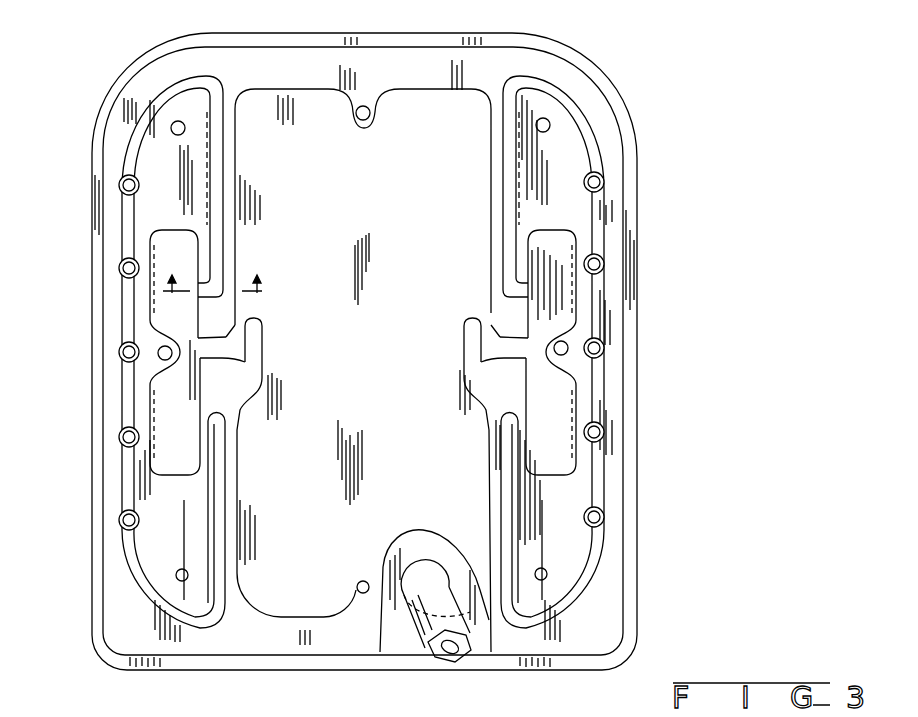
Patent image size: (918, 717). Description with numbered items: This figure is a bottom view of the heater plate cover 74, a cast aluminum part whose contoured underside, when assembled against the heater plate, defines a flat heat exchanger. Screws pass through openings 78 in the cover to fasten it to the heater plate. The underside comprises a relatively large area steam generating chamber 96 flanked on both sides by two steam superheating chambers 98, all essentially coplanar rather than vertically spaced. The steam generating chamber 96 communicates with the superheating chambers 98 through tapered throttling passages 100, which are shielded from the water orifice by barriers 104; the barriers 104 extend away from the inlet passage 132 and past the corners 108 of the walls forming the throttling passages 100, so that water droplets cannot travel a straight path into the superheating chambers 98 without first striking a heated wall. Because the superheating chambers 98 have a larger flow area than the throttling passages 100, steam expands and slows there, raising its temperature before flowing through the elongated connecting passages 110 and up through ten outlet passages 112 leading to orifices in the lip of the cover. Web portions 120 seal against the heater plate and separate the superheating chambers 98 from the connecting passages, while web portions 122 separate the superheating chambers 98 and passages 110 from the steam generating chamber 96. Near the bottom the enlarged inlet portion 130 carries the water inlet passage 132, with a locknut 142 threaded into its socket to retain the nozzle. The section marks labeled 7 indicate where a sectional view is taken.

The heater plate cover 74 is at (606, 68).
The openings 78 is at (178, 121).
The steam generating chamber 96 is at (435, 105).
The steam superheating chambers 98 is at (165, 410).
The tapered throttling passages 100 is at (225, 356).
The barriers 104 is at (254, 340).
The corners 108 is at (236, 327).
The elongated connecting passages 110 is at (207, 76).
The outlet passages 112 is at (120, 183).
The web portions 120 is at (158, 130).
The web portions 122 is at (232, 172).
The enlarged inlet portion 130 is at (450, 583).
The water inlet passage 132 is at (421, 580).
The locknut 142 is at (433, 654).
The section line 7- 7 is at (214, 272).